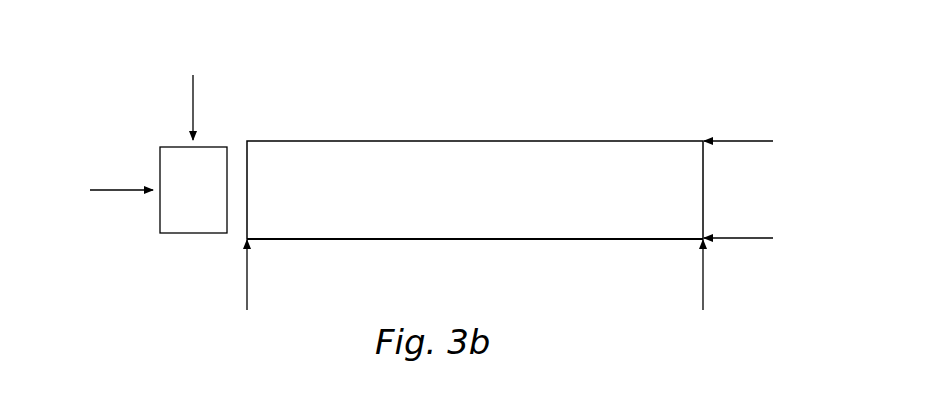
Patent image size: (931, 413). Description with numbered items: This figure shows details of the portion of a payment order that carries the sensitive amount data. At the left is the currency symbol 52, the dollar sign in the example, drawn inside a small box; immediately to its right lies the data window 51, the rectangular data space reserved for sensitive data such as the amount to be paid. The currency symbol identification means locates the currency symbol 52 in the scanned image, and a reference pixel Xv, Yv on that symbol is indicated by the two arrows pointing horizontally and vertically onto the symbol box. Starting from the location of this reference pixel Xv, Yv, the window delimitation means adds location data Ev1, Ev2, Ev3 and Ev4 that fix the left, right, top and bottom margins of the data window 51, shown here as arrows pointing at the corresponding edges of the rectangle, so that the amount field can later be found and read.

The data window 51 is at (516, 229).
The currency symbol 52 is at (160, 155).
The reference pixel horizontal coordinate Xv is at (189, 95).
The reference pixel vertical coordinate Yv is at (105, 189).
The left margin location data Ev1 is at (248, 290).
The right margin location data Ev2 is at (703, 291).
The top margin location data Ev3 is at (758, 238).
The bottom margin location data Ev4 is at (758, 141).